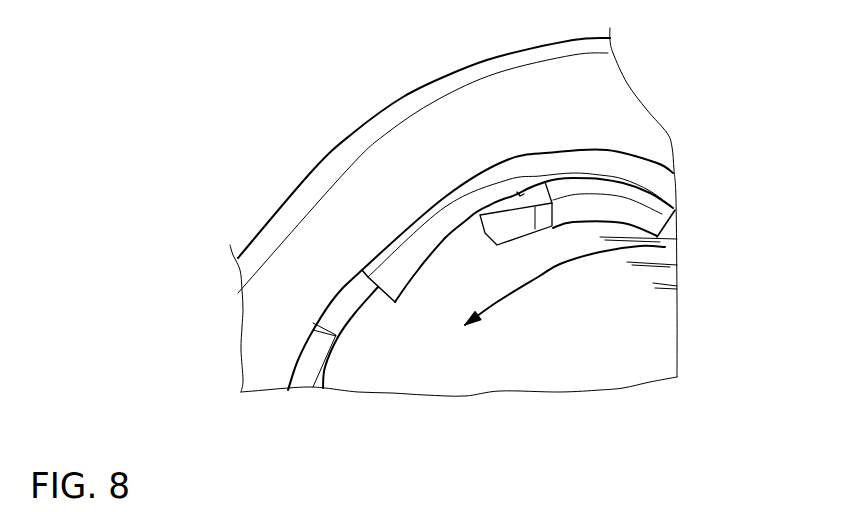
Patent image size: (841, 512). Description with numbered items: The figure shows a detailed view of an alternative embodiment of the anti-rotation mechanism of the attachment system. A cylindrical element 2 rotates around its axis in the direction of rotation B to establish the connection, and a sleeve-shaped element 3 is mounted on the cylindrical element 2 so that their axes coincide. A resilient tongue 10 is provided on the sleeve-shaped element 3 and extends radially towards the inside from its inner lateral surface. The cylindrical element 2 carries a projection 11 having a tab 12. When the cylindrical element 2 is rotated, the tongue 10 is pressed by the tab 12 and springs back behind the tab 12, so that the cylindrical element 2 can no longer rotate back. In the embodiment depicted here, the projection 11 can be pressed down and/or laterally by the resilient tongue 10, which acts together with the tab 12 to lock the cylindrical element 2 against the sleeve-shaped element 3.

The cylindrical element 2 is at (418, 359).
The sleeve-shaped element 3 is at (282, 218).
The tongue 10 is at (397, 262).
The projection 11 is at (498, 217).
The tab 12 is at (512, 198).
The direction of rotation B is at (538, 277).